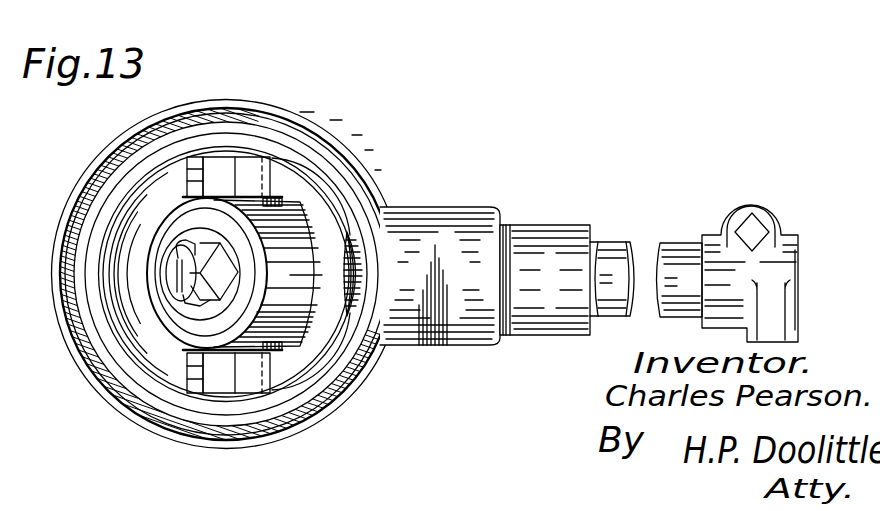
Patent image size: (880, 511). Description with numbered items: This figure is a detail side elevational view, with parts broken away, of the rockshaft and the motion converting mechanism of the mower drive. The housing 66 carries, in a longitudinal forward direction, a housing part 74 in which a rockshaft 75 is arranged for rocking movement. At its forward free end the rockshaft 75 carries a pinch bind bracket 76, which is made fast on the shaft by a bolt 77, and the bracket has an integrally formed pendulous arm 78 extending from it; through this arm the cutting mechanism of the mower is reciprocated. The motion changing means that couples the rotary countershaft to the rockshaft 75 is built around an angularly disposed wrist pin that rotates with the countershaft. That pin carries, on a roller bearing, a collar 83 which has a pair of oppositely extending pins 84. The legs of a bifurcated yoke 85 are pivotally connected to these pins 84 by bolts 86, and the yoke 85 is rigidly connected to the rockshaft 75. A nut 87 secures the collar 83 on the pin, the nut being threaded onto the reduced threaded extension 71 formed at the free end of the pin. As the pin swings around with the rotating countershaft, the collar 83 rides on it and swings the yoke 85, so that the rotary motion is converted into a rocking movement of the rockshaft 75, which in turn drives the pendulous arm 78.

The housing 66 is at (324, 420).
The reduced threaded extension 71 is at (170, 263).
The housing part 74 is at (537, 238).
The rockshaft 75 is at (628, 258).
The pinch bind bracket 76 is at (788, 262).
The bolt 77 is at (752, 220).
The pendulous arm 78 is at (797, 342).
The collar 83 is at (295, 297).
The pins 84 is at (253, 170).
The bifurcated yoke 85 is at (313, 207).
The bolts 86 is at (194, 165).
The nut 87 is at (187, 307).